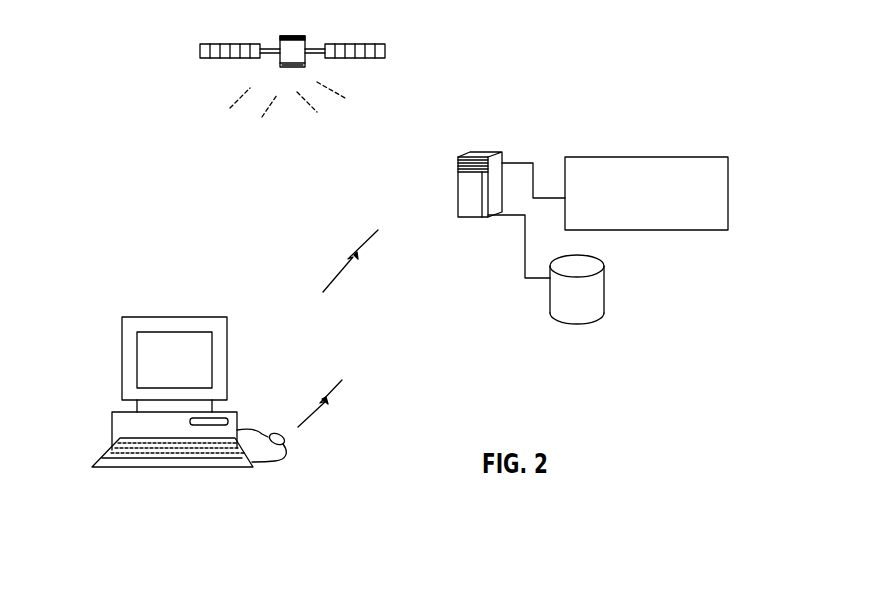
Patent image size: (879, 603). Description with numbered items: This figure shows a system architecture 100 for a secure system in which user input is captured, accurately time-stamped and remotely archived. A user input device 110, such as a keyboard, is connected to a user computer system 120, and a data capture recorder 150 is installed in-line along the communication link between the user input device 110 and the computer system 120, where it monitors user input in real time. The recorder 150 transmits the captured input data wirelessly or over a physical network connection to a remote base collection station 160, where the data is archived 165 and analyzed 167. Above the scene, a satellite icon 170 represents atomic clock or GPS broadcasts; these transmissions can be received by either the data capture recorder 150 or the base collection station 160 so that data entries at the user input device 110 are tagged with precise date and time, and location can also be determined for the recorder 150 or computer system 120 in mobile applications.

The system architecture 100 is at (124, 103).
The user input device 110 is at (115, 468).
The user computer system 120 is at (118, 418).
The data capture recorder 150 is at (270, 438).
The remote base collection station 160 is at (492, 158).
The archive 165 is at (590, 307).
The analysis 167 is at (698, 168).
The atomic clock or GPS satellite 170 is at (370, 58).